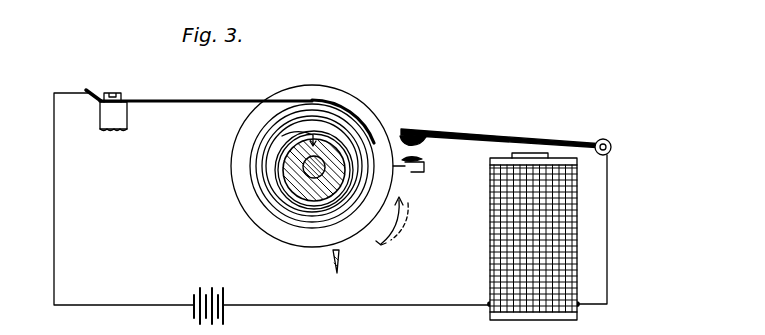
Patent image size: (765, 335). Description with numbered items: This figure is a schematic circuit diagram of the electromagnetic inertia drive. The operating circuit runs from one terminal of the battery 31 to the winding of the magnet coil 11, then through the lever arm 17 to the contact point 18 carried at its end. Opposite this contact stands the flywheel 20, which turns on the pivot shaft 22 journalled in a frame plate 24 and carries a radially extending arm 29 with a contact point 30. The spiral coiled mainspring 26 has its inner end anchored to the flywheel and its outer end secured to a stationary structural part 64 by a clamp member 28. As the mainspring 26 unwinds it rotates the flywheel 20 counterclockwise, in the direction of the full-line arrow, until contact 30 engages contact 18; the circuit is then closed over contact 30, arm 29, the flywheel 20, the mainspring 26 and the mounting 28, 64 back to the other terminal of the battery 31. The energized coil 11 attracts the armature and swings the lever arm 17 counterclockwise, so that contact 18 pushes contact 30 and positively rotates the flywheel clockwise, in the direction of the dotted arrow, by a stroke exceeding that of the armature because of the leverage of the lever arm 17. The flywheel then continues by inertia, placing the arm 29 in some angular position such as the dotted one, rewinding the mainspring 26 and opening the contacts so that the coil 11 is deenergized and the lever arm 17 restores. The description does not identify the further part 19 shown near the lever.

The coil of the electromagnetic drive motor 11 is at (497, 235).
The lever arm 17 is at (493, 134).
The contact point 18 is at (427, 135).
The roller 19 is at (611, 145).
The flywheel 20 is at (342, 93).
The pivot shaft 22 is at (302, 169).
The frame plate 24 is at (295, 185).
The spiral coiled mainspring 26 is at (363, 118).
The clamp member 28 is at (125, 100).
The arm 29 is at (419, 171).
The contact point 30 is at (421, 161).
The battery 31 is at (225, 300).
The stationary structural part 64 is at (110, 118).